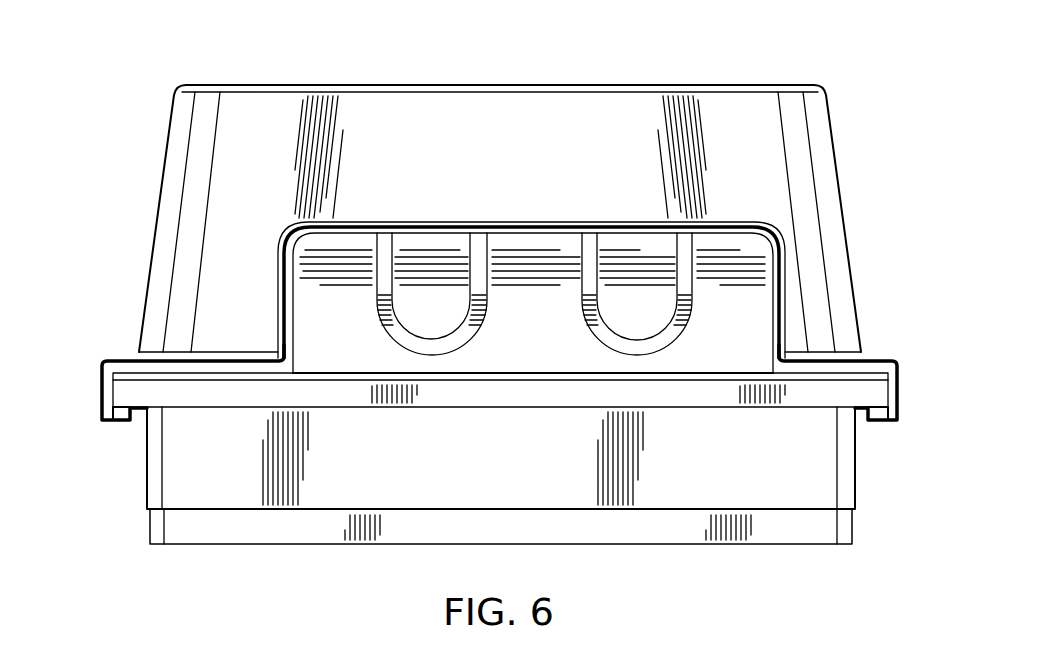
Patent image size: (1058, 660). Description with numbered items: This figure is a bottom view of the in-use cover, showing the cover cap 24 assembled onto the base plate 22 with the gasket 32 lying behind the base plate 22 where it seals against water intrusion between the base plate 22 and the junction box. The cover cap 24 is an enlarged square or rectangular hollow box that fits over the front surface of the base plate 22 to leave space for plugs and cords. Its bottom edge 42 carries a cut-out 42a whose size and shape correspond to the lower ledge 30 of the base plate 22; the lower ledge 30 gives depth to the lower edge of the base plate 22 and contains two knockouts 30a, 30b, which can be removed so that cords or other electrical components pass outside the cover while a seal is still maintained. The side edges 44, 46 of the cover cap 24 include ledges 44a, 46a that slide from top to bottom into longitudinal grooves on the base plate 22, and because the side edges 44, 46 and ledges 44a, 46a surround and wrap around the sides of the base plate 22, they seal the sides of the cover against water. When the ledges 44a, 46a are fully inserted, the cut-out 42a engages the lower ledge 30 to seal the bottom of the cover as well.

The base plate 22 is at (852, 482).
The cover cap 24 is at (773, 168).
The lower ledge 30 is at (533, 311).
The knockout 30a is at (432, 294).
The knockout 30b is at (637, 294).
The gasket 32 is at (852, 527).
The bottom edge 42 is at (499, 222).
The cut-out 42a is at (507, 222).
The side edge 44 is at (897, 393).
The ledge 44a is at (878, 421).
The side edge 46 is at (101, 393).
The ledge 46a is at (125, 421).